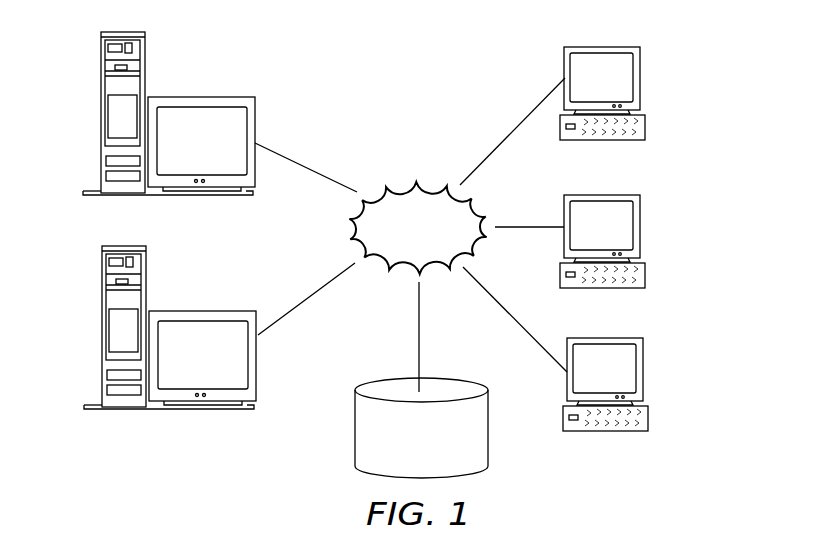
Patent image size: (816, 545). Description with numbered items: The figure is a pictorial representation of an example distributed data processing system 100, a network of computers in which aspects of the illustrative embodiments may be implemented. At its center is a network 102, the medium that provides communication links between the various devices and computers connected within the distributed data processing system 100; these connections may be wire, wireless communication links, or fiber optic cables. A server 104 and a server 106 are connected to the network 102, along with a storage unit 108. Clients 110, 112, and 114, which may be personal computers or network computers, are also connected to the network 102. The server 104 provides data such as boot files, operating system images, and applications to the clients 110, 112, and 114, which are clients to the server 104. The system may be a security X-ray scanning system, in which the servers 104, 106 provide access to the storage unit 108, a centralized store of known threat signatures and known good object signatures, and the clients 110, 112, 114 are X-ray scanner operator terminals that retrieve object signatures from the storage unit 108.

The distributed data processing system 100 is at (471, 61).
The network 102 is at (412, 175).
The server 104 is at (101, 115).
The server 106 is at (102, 333).
The storage unit 108 is at (355, 432).
The client 110 is at (640, 73).
The client 112 is at (640, 222).
The client 114 is at (643, 370).